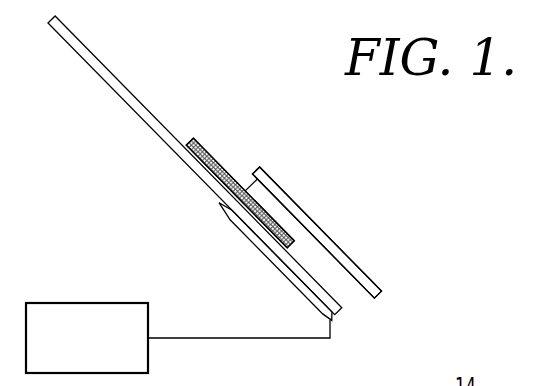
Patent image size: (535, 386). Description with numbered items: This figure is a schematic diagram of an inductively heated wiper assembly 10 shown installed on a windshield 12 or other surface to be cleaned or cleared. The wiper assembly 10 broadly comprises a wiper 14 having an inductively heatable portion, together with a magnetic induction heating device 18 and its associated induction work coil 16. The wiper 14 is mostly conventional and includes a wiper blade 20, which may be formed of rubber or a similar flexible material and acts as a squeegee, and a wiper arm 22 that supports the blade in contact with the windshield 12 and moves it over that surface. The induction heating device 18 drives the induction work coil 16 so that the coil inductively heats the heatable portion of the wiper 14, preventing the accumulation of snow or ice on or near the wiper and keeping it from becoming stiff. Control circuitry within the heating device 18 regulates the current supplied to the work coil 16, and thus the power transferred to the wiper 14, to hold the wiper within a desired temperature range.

The inductively heated wiper assembly 10 is at (222, 58).
The windshield 12 is at (95, 60).
The wiper 14 is at (334, 174).
The induction work coil 16 is at (248, 243).
The magnetic induction heating device 18 is at (72, 303).
The wiper blade 20 is at (214, 152).
The wiper arm 22 is at (362, 268).